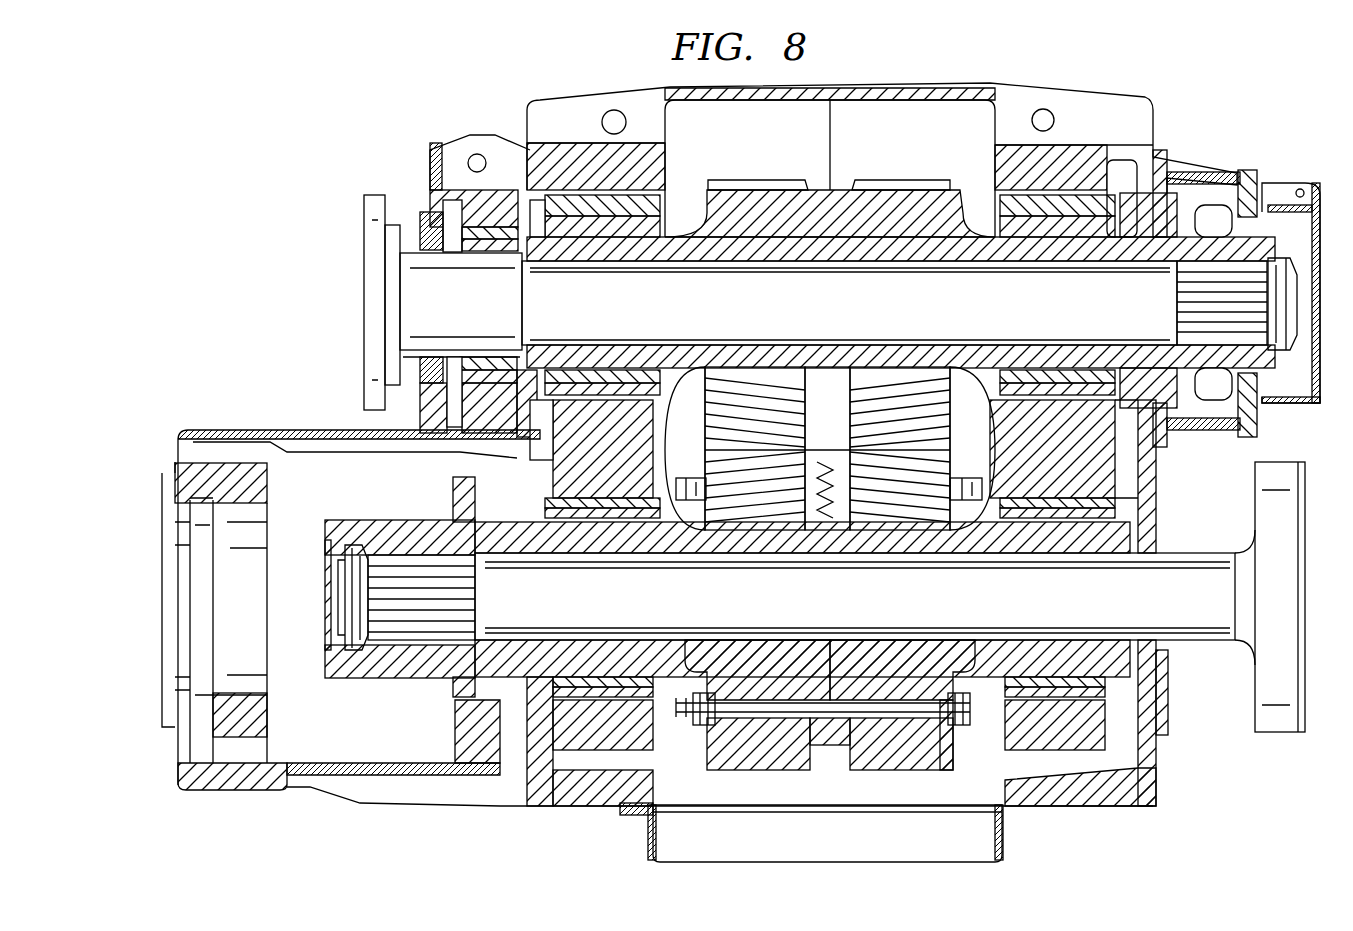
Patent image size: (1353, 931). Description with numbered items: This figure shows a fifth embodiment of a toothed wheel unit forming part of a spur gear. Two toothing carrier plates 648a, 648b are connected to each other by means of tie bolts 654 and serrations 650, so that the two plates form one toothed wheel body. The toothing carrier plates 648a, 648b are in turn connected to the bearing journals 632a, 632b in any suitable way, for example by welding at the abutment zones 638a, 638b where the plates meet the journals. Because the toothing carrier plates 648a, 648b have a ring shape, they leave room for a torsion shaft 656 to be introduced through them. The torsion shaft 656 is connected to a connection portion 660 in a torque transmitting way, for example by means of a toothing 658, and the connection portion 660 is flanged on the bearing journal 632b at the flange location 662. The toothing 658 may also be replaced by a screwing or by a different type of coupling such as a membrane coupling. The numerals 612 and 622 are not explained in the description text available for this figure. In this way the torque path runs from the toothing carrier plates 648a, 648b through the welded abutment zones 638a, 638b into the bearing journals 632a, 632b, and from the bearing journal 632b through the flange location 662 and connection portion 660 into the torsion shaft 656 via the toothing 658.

The motor end cover 612 is at (937, 782).
The housing wall 622 is at (947, 733).
The bearing journal 632a is at (1053, 527).
The bearing journal 632b is at (597, 662).
The abutment zone 638a is at (973, 647).
The abutment zone 638b is at (682, 667).
The toothing carrier plate 648a is at (887, 752).
The toothing carrier plate 648b is at (750, 752).
The serrations 650 is at (833, 730).
The tie bolts 654 is at (677, 710).
The torsion shaft 656 is at (415, 568).
The toothing 658 is at (408, 645).
The connection portion 660 is at (342, 675).
The flange location 662 is at (453, 698).